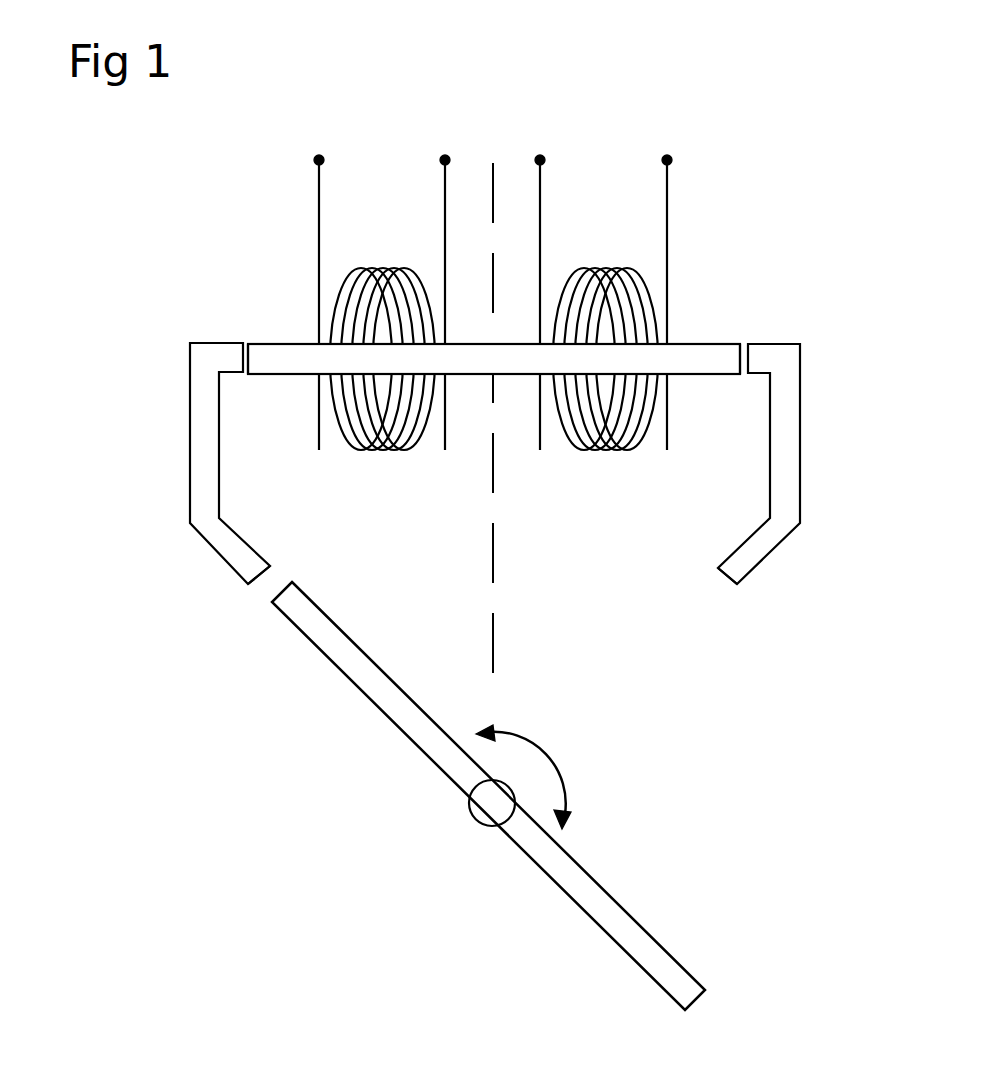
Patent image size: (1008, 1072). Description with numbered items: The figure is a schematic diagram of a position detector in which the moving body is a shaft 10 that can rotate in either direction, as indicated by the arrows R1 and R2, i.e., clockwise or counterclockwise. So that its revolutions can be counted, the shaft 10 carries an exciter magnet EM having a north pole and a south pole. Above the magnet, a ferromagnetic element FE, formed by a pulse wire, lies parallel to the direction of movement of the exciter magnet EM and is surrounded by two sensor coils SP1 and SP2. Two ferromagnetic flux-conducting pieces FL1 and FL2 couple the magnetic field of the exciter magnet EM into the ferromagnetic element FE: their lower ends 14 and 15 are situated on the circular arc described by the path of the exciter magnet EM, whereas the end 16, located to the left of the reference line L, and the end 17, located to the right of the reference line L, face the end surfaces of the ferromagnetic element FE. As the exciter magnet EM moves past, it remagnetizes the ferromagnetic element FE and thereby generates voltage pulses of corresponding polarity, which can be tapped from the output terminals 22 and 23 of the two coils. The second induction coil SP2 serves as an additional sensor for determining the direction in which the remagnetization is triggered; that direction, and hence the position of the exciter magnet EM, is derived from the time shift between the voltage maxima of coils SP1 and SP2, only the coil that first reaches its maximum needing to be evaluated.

The shaft 10 is at (490, 804).
The end of flux-conducting piece 14 is at (252, 583).
The end of flux-conducting piece 15 is at (737, 583).
The end of flux-conducting piece 16 is at (242, 357).
The end of flux-conducting piece 17 is at (750, 357).
The output terminal 22 is at (382, 257).
The output terminal 23 is at (603, 257).
The ferromagnetic element FE is at (461, 368).
The sensor coil SP1 is at (383, 273).
The second induction coil SP2 is at (605, 273).
The ferromagnetic flux-conducting piece FL1 is at (207, 440).
The ferromagnetic flux-conducting piece FL2 is at (782, 430).
The exciter magnet EM is at (619, 930).
The reference line L is at (494, 176).
The direction of rotation R1 is at (553, 781).
The direction of rotation R2 is at (512, 716).